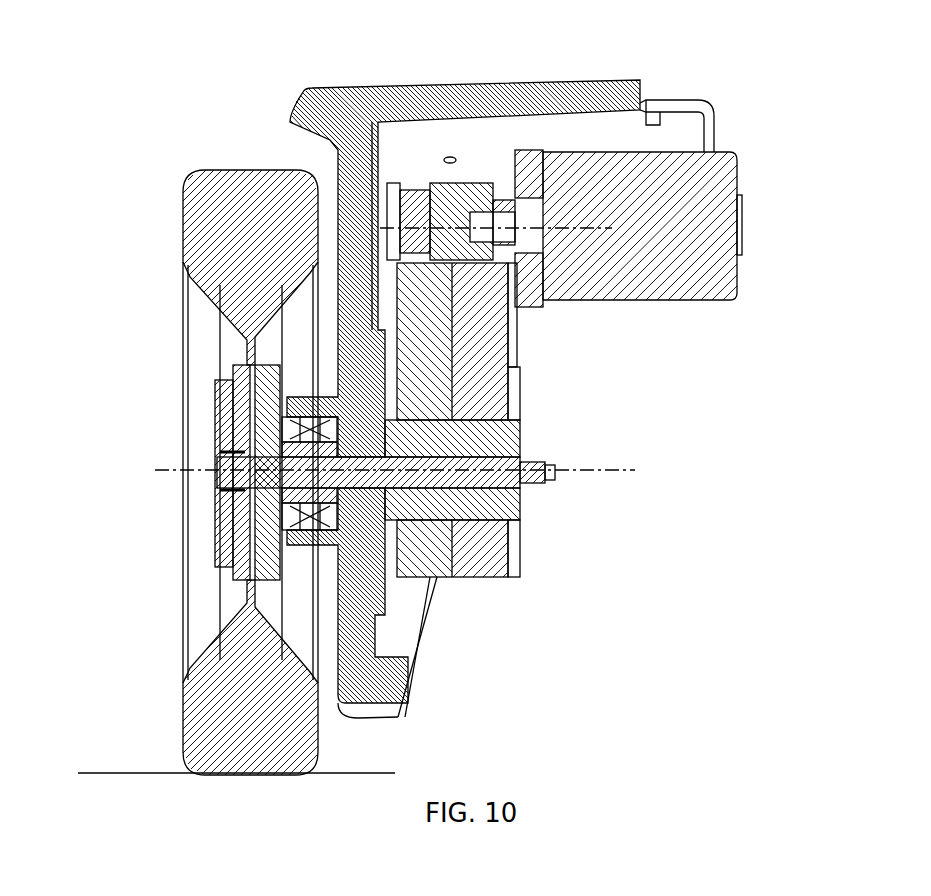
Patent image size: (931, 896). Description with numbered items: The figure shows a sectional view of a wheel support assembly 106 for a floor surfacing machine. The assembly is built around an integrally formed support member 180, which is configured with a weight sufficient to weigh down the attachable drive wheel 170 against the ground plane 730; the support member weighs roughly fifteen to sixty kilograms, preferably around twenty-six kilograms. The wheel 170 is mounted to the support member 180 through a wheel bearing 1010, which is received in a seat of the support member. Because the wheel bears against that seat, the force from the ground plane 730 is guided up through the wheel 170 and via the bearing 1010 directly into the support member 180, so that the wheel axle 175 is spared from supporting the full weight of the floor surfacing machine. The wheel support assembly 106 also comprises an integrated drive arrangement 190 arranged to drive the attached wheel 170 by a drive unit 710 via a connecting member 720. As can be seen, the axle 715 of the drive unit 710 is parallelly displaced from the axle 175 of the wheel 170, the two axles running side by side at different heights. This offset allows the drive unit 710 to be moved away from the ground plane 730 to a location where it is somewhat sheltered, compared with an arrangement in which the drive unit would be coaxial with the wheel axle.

The wheel support assembly 106 is at (107, 72).
The drive wheel 170 is at (207, 182).
The wheel axle 175 is at (157, 470).
The support member 180 is at (393, 98).
The integrated drive arrangement 190 is at (702, 420).
The drive unit 710 is at (710, 285).
The axle of the drive unit 715 is at (597, 229).
The connecting member 720 is at (496, 360).
The ground plane 730 is at (225, 759).
The wheel bearing 1010 is at (300, 428).